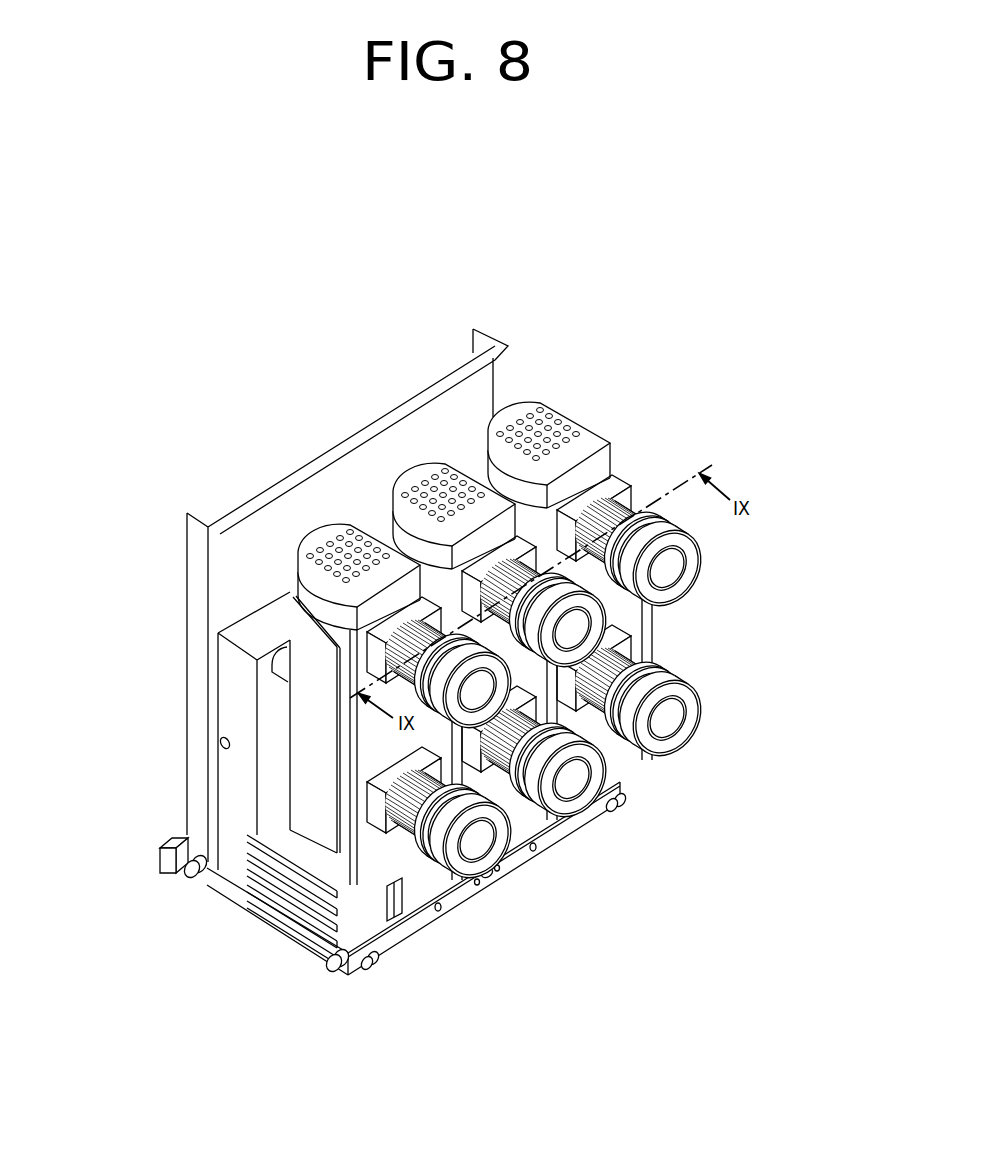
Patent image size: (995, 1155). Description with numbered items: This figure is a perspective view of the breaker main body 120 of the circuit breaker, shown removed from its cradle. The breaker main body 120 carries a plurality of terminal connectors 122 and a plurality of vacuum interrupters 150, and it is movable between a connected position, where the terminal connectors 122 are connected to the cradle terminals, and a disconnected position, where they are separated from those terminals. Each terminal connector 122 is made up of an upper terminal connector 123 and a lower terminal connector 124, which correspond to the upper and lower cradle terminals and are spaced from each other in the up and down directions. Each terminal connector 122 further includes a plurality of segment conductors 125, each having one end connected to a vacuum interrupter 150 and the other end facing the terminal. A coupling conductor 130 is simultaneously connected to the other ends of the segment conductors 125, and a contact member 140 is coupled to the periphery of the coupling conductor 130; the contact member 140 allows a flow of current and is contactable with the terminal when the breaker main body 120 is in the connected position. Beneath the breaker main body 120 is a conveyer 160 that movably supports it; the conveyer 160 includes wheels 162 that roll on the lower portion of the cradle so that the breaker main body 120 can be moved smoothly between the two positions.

The breaker main body 120 is at (165, 477).
The terminal connector 122 is at (717, 621).
The upper terminal connector 123 is at (704, 565).
The lower terminal connector 124 is at (688, 696).
The segment conductor 125 is at (403, 822).
The coupling conductor 130 is at (418, 823).
The contact member 140 is at (457, 887).
The vacuum interrupter 150 is at (476, 458).
The conveyer 160 is at (150, 845).
The roller pin 162 is at (325, 968).